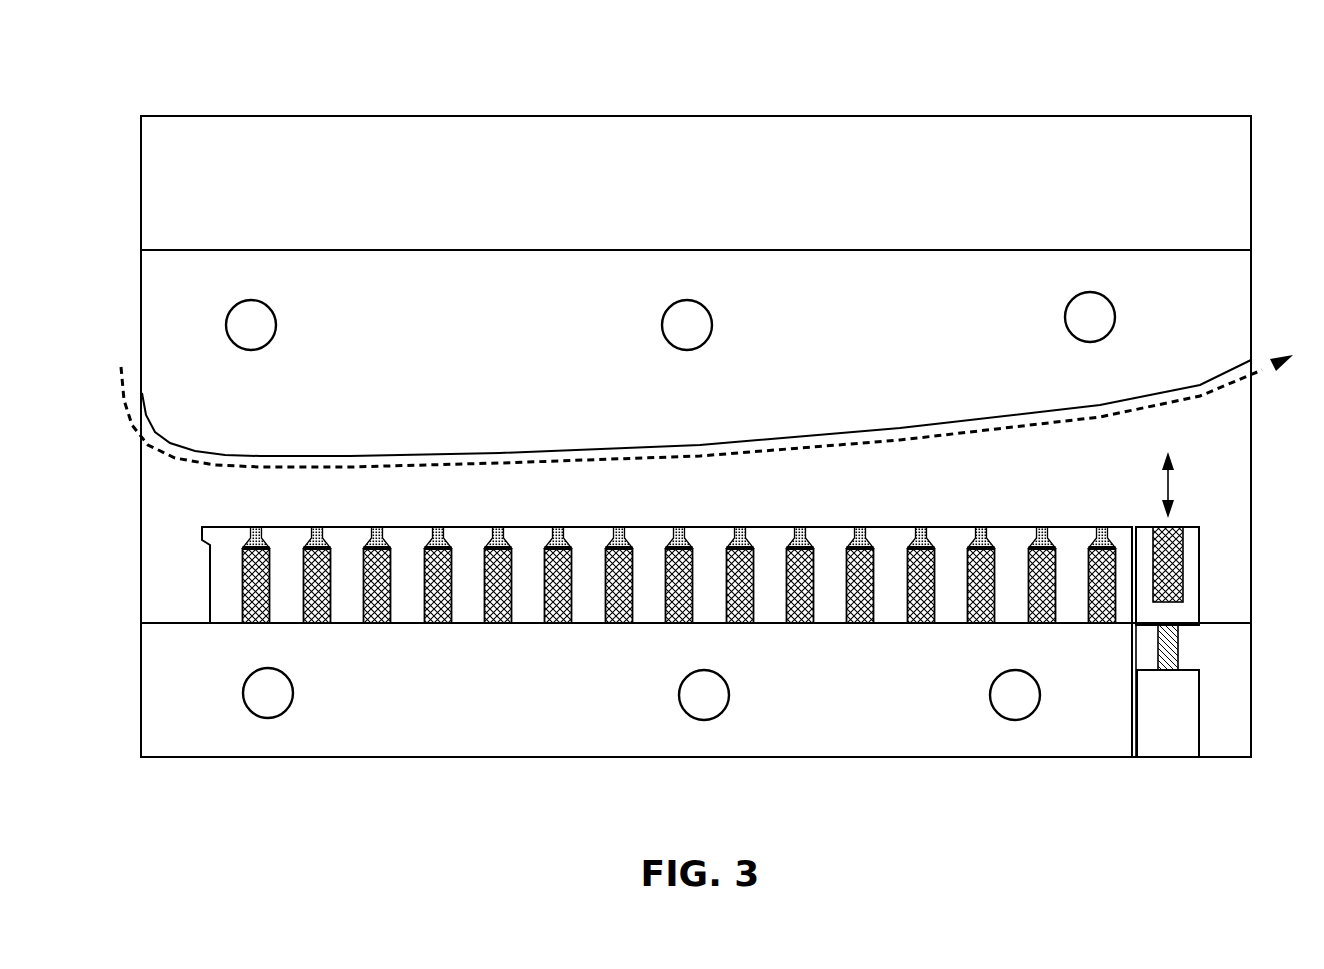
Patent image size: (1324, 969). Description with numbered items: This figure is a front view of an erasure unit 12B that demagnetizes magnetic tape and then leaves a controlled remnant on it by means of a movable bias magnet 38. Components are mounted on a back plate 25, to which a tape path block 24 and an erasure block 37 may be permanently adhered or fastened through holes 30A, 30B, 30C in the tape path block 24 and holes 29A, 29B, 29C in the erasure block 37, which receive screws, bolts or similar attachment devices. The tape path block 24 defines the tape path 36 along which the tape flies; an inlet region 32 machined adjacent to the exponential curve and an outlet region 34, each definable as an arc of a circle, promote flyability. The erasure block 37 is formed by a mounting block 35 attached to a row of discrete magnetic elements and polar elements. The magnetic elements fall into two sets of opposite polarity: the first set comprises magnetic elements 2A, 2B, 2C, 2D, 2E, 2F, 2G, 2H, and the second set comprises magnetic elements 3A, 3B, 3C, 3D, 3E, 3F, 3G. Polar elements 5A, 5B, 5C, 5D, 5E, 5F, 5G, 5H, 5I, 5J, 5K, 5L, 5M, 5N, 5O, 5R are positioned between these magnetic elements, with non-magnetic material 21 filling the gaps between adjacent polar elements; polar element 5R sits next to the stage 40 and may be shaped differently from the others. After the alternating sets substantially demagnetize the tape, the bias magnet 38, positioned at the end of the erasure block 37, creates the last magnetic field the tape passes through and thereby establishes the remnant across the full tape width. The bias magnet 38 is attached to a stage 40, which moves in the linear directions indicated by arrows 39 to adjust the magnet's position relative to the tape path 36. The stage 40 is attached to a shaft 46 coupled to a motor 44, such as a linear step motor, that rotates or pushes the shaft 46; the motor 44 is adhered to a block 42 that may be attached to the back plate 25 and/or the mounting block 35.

The erasure unit 12B is at (928, 90).
The back plate 25 is at (1222, 186).
The tape path block 24 is at (1222, 317).
The tape path 36 is at (701, 404).
The inlet region 32 is at (190, 405).
The outlet region 34 is at (1205, 370).
The hole 30A is at (277, 322).
The hole 30B is at (712, 322).
The hole 30C is at (1067, 311).
The mounting block 35 is at (868, 757).
The erasure block 37 is at (160, 598).
The non-magnetic material 21 is at (254, 527).
The magnetic element 2A is at (257, 623).
The magnetic element 3A is at (317, 623).
The magnetic element 2B is at (377, 623).
The magnetic element 3B is at (438, 623).
The magnetic element 2C is at (498, 623).
The magnetic element 3C is at (558, 623).
The magnetic element 2D is at (619, 623).
The magnetic element 3D is at (679, 623).
The magnetic element 2E is at (740, 623).
The magnetic element 3E is at (800, 623).
The magnetic element 2F is at (860, 623).
The magnetic element 3F is at (921, 623).
The magnetic element 2G is at (981, 623).
The magnetic element 3G is at (1042, 623).
The magnetic element 2H is at (1102, 623).
The polar element 5A is at (225, 623).
The polar element 5B is at (293, 623).
The polar element 5C is at (352, 623).
The polar element 5D is at (413, 623).
The polar element 5E is at (474, 623).
The polar element 5F is at (535, 623).
The polar element 5G is at (595, 623).
The polar element 5H is at (656, 623).
The polar element 5I is at (715, 623).
The polar element 5J is at (776, 623).
The polar element 5K is at (836, 623).
The polar element 5L is at (897, 623).
The polar element 5M is at (958, 623).
The polar element 5N is at (1018, 623).
The polar element 5O is at (1076, 623).
The polar element 5R is at (1124, 623).
The hole 29A is at (275, 717).
The hole 29B is at (714, 718).
The hole 29C is at (1020, 719).
The arrows 39 is at (1170, 484).
The stage 40 is at (1190, 537).
The bias magnet 38 is at (1175, 575).
The shaft 46 is at (1178, 642).
The motor 44 is at (1199, 713).
The block 42 is at (1225, 757).